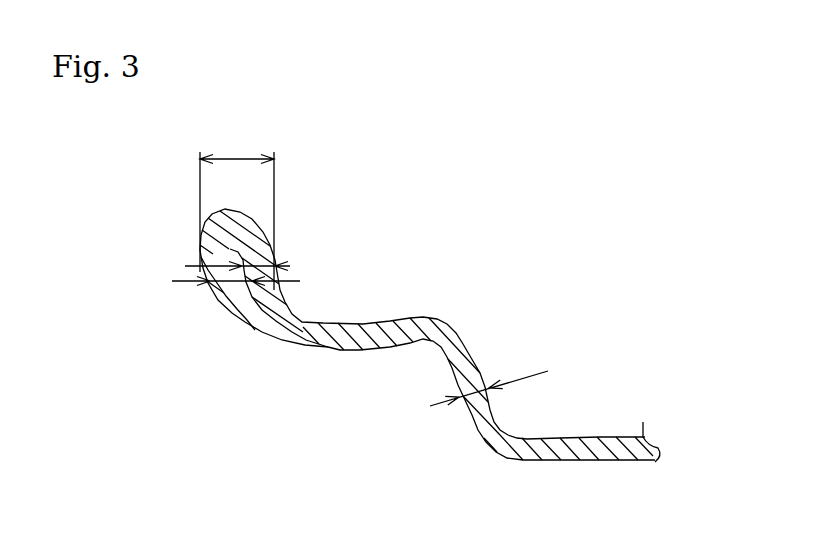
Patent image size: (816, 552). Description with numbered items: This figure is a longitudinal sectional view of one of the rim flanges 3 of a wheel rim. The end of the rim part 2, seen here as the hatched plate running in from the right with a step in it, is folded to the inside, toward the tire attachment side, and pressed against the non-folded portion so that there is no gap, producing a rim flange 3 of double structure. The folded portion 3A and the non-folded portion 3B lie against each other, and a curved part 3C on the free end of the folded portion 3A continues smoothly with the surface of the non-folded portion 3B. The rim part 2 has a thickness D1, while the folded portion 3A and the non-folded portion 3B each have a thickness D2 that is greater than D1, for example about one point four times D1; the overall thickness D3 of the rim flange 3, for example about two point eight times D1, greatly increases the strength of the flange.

The rim part 2 is at (600, 436).
The rim flange 3 is at (300, 214).
The folded portion 3A is at (290, 266).
The non-folded portion 3B is at (228, 306).
The curved part 3C is at (284, 303).
The thickness of the rim part D1 is at (491, 373).
The thickness of the folded portion and non-folded portion D2 is at (188, 266).
The overall thickness of the rim flange D3 is at (237, 207).